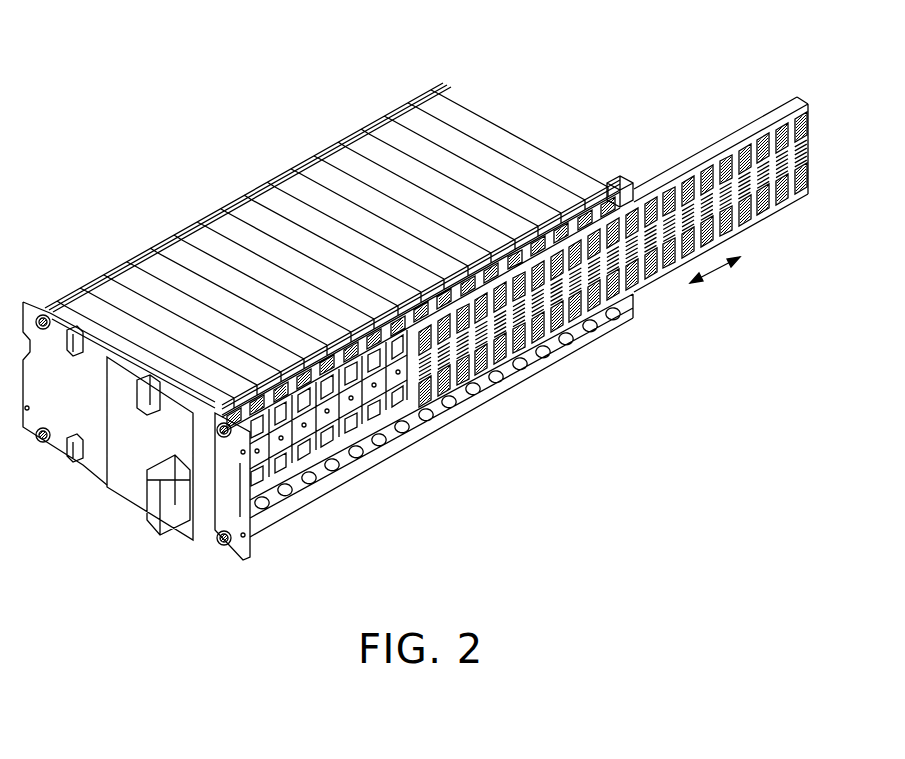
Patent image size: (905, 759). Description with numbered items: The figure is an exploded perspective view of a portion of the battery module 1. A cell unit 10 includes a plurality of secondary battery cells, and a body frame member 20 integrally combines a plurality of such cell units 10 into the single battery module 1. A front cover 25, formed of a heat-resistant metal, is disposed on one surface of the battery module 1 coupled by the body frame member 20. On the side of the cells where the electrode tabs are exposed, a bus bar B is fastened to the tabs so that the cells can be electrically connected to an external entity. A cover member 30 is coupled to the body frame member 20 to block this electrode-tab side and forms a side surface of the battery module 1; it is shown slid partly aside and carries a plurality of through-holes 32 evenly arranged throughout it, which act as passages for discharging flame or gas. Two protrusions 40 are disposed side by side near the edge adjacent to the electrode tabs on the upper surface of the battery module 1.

The battery module 1 is at (291, 33).
The cell unit 10 is at (520, 130).
The body frame member 20 is at (217, 540).
The front cover 25 is at (130, 477).
The cover member 30 is at (757, 119).
The through-hole 32 is at (776, 207).
The protrusion 40 is at (614, 180).
The bus bar B is at (352, 412).